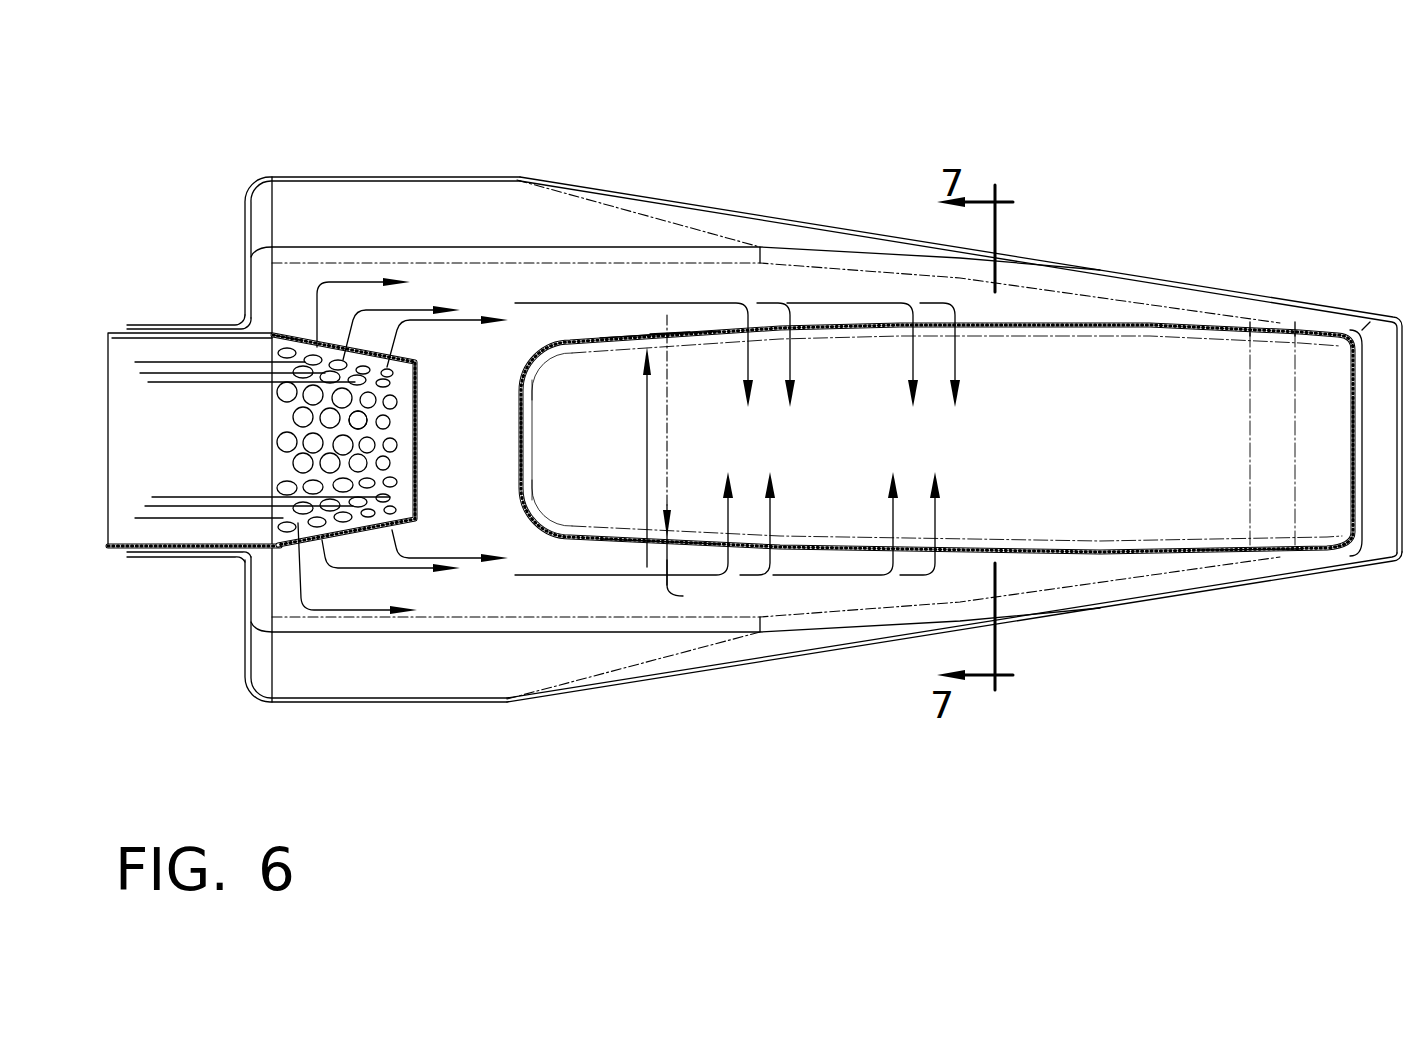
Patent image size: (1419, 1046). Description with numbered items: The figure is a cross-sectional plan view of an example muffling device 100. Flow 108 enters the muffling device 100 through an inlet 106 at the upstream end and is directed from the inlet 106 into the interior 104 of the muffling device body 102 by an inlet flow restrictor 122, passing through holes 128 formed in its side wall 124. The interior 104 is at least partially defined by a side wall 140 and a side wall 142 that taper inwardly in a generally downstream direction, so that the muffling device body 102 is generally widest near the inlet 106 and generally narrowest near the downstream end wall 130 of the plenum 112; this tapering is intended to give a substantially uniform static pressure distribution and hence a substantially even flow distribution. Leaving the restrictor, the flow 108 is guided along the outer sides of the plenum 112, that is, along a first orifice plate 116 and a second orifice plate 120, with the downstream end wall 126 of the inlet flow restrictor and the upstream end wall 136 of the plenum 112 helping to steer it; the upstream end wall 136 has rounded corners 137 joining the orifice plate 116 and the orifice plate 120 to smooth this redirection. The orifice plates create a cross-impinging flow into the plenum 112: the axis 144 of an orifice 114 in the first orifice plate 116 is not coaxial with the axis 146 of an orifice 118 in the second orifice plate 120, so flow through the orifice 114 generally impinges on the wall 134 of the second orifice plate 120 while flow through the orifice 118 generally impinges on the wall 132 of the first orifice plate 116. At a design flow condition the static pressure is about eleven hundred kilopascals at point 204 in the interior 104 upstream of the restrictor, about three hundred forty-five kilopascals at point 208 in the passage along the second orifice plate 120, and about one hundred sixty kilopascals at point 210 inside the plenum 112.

The muffling device 100 is at (1075, 85).
The muffling device body 102 is at (550, 702).
The interior 104 is at (487, 521).
The inlet 106 is at (202, 407).
The flow 108 is at (353, 280).
The plenum 112 is at (1049, 452).
The orifice 114 is at (670, 333).
The orifice plate 116 is at (1297, 333).
The orifice 118 is at (640, 548).
The orifice plate 120 is at (1242, 553).
The inlet flow restrictor 122 is at (337, 530).
The side wall 124 is at (283, 540).
The downstream end wall 126 is at (420, 393).
The holes 128 is at (290, 323).
The downstream end wall 130 is at (1347, 500).
The wall 132 is at (655, 340).
The wall 134 is at (700, 584).
The upstream end wall 136 is at (517, 453).
The rounded corners 137 is at (540, 367).
The side wall 140 is at (780, 219).
The side wall 142 is at (1007, 623).
The axis 144 is at (668, 424).
The axis 146 is at (643, 408).
The point 204 is at (367, 431).
The point 208 is at (812, 611).
The point 210 is at (869, 451).